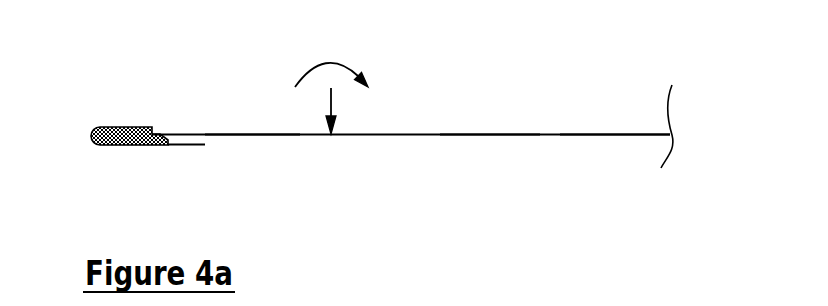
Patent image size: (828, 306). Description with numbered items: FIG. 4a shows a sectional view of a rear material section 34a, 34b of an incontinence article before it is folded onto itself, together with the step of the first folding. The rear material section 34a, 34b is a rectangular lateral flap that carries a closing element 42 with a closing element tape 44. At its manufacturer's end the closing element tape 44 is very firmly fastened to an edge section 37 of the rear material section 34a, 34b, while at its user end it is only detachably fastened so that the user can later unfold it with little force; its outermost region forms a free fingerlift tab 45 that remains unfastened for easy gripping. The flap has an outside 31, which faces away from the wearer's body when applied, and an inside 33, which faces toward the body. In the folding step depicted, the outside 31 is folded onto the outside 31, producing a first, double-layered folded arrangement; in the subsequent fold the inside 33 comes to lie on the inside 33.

The outside 31 is at (462, 122).
The inside 33 is at (488, 145).
The rear material section 34a is at (616, 90).
The second material section 34b is at (583, 107).
The edge section 37 is at (245, 145).
The closing element 42 is at (119, 92).
The closing element tape 44 is at (131, 108).
The fingerlift tab 45 is at (198, 146).